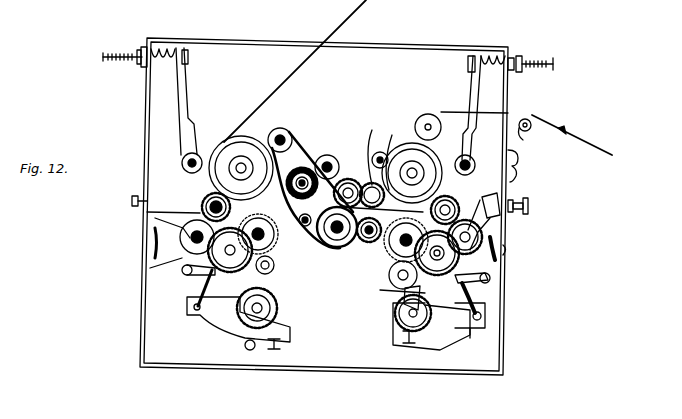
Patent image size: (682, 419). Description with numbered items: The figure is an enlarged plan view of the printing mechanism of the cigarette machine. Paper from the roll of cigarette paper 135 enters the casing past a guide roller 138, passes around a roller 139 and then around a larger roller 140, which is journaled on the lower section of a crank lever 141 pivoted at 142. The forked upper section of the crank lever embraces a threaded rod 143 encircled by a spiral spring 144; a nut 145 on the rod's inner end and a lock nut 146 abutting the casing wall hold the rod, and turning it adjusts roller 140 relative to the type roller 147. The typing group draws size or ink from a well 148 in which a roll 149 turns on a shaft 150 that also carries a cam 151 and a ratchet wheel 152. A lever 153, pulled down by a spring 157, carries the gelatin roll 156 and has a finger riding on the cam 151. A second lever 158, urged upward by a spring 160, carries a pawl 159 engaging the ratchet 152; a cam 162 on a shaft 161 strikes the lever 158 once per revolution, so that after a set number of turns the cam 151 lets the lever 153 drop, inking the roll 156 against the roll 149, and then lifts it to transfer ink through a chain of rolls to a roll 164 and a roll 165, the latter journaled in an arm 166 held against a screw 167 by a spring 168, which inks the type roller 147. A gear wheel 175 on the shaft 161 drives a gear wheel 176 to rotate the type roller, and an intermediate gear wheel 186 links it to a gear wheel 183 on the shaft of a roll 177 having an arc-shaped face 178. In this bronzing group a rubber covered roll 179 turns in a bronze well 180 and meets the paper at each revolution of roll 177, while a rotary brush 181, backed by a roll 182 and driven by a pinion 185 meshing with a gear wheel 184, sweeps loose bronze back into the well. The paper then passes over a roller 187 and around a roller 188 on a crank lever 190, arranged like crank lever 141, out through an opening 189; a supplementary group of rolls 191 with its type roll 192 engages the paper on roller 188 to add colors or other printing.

The roll of cigarette paper 135 is at (612, 155).
The roller 138 is at (532, 118).
The roller 139 is at (428, 114).
The roller 140 is at (404, 143).
The crank lever 141 is at (476, 100).
The pivot 142 is at (470, 160).
The threaded rod 143 is at (540, 60).
The spiral spring 144 is at (490, 56).
The nut 145 is at (471, 56).
The lock nut 146 is at (518, 56).
The type roller 147 is at (480, 194).
The size or ink well 148 is at (465, 325).
The roll 149 is at (405, 296).
The shaft 150 is at (398, 318).
The cam 151 is at (412, 318).
The ratchet wheel 152 is at (390, 282).
The lever 153 is at (492, 278).
The gelatin roll 156 is at (268, 250).
The spring 157 is at (486, 312).
The lever 158 is at (398, 254).
The pawl 159 is at (490, 332).
The spring 160 is at (472, 290).
The shaft 161 is at (330, 242).
The cam 162 is at (369, 244).
The roll 164 is at (460, 262).
The roll 165 is at (482, 240).
The arm 166 is at (492, 218).
The screw 167 is at (528, 204).
The spring 168 is at (495, 236).
The gear wheel 175 is at (378, 156).
The gear wheel 176 is at (453, 204).
The roll 177 is at (362, 185).
The arc-shaped face 178 is at (346, 178).
The rubber covered roll 179 is at (260, 268).
The bronze well 180 is at (304, 166).
The rotary brush 181 is at (304, 174).
The roll 182 is at (328, 153).
The gear wheel 183 is at (372, 130).
The gear wheel 184 is at (270, 312).
The pinion 185 is at (315, 125).
The intermediate gear wheel 186 is at (392, 150).
The roller 187 is at (280, 128).
The roller 188 is at (224, 140).
The opening 189 is at (322, 40).
The crank lever 190 is at (186, 100).
The supplementary group of rolls 191 is at (199, 245).
The type roll 192 is at (205, 213).